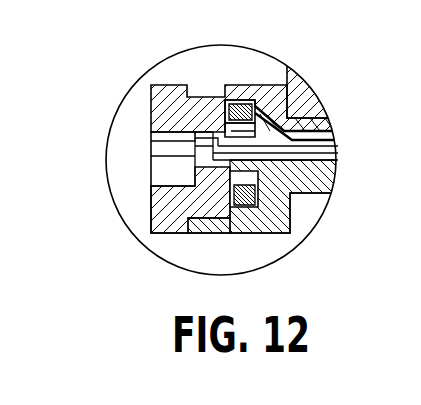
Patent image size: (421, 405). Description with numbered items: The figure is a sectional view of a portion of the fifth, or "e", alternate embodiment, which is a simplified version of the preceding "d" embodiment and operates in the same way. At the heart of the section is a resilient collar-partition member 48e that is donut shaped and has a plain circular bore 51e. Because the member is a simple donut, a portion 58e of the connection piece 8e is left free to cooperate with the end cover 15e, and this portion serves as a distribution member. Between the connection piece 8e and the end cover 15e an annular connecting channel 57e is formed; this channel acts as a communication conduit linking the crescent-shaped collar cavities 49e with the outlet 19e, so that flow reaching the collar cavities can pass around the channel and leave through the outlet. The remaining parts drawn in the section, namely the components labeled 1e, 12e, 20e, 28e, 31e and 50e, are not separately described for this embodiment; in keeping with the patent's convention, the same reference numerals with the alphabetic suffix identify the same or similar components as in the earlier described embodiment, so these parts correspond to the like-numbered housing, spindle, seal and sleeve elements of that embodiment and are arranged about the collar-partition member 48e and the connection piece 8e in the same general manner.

The housing body 1e is at (312, 207).
The connection piece 8e is at (267, 230).
The valve member 12e is at (238, 105).
The end cover 15e is at (168, 212).
The outlet 19e is at (210, 164).
The retaining ring 20e is at (163, 153).
The spindle 28e is at (337, 157).
The sealing sleeve 31e is at (303, 125).
The resilient collar-partition member 48e is at (248, 192).
The crescent-shaped collar cavities 49e is at (226, 135).
The upper seal 50e is at (244, 120).
The circular bore 51e is at (290, 88).
The annular connecting channel 57e is at (230, 140).
The portion of the connection piece 58e is at (228, 165).